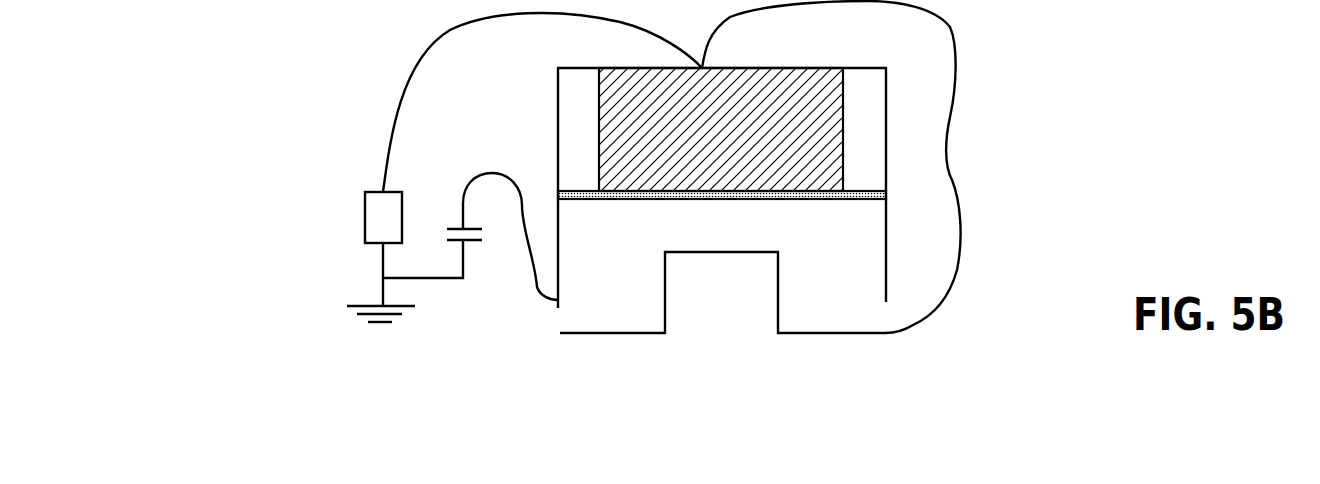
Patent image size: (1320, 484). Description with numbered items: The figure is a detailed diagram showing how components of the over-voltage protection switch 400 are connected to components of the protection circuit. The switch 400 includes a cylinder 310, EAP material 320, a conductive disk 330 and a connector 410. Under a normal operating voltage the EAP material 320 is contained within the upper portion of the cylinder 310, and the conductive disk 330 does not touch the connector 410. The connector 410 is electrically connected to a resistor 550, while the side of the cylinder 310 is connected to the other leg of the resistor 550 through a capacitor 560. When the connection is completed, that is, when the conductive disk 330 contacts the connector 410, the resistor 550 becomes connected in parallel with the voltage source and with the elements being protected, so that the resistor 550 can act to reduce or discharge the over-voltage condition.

The cylinder 310 is at (558, 93).
The EAP material 320 is at (820, 133).
The conductive disk 330 is at (848, 200).
The over-voltage protection switch 400 is at (803, 62).
The connector 410 is at (647, 333).
The resistor 550 is at (362, 220).
The capacitor 560 is at (473, 243).